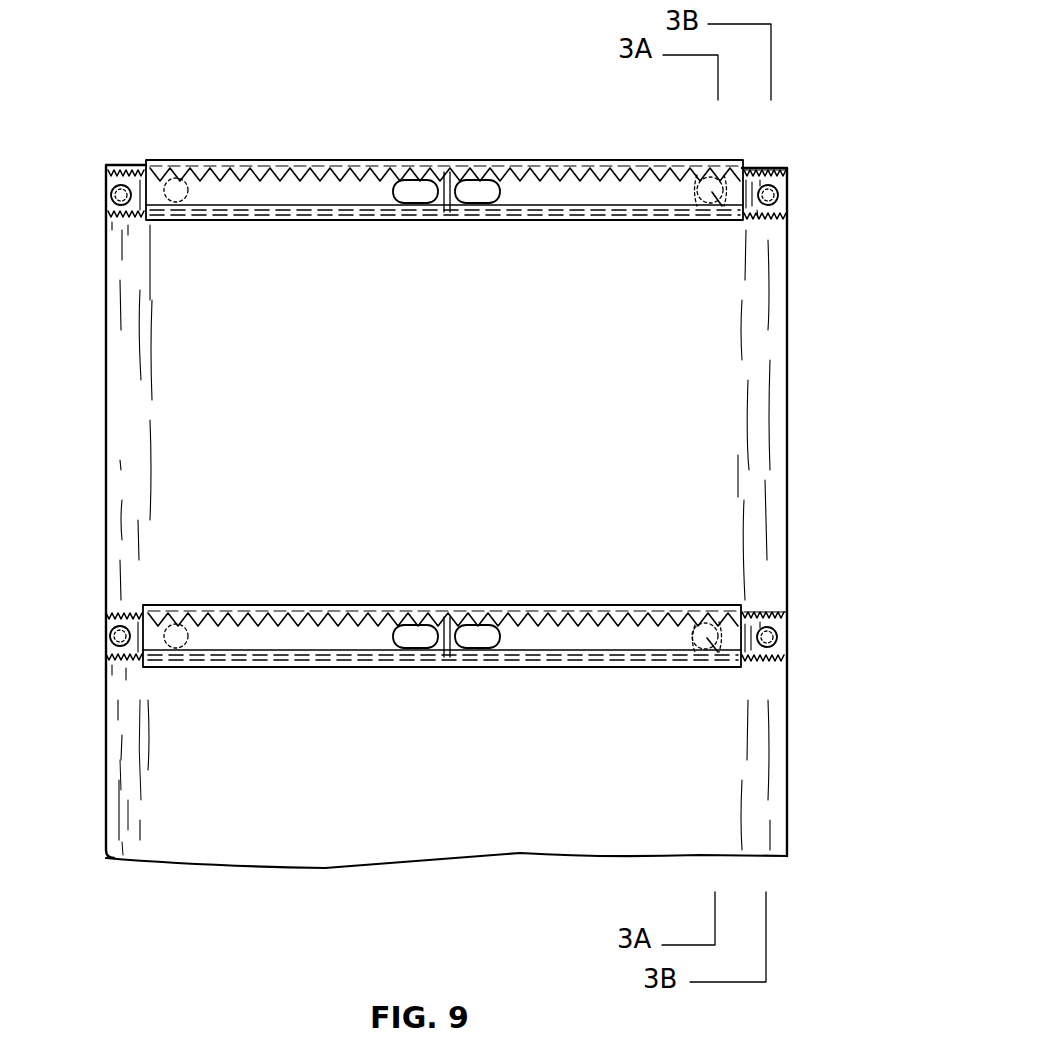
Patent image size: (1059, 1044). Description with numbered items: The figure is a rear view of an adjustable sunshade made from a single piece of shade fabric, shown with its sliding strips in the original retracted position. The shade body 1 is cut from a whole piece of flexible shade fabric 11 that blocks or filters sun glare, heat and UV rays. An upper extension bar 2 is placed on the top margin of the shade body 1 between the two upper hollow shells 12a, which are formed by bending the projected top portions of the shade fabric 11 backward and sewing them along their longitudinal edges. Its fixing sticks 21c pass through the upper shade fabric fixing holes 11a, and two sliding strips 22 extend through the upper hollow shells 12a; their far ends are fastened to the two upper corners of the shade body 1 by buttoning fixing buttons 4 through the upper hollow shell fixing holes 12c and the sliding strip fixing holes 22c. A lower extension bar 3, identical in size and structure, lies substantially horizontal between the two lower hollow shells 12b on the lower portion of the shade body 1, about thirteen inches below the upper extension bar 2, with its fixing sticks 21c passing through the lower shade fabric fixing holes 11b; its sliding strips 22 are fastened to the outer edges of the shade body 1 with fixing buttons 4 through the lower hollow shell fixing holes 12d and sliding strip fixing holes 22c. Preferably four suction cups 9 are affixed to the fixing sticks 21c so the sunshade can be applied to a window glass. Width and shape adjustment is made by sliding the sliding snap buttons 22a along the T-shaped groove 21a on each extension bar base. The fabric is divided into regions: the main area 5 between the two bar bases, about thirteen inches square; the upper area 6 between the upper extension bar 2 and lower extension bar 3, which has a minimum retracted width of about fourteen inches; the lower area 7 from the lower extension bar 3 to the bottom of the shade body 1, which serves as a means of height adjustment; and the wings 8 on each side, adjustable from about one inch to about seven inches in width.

The shade body 1 is at (300, 342).
The upper extension bar 2 is at (215, 160).
The lower extension bar 3 is at (258, 676).
The fixing button 4 is at (787, 207).
The main area 5 is at (553, 384).
The upper area 6 is at (565, 459).
The lower area 7 is at (215, 733).
The wings 8 is at (126, 482).
The suction cup 9 is at (706, 172).
The shade fabric 11 is at (308, 402).
The upper shade fabric fixing hole 11a is at (716, 197).
The lower shade fabric fixing hole 11b is at (712, 642).
The upper hollow shell 12a is at (770, 168).
The lower hollow shell 12b is at (770, 617).
The upper hollow shell fixing hole 12c is at (788, 190).
The lower hollow shell fixing hole 12d is at (786, 634).
The T-shaped groove 21a is at (448, 186).
The fixing stick 21c is at (722, 210).
The sliding strip 22 is at (752, 182).
The sliding snap button 22a is at (484, 192).
The sliding strip fixing hole 22c is at (782, 196).